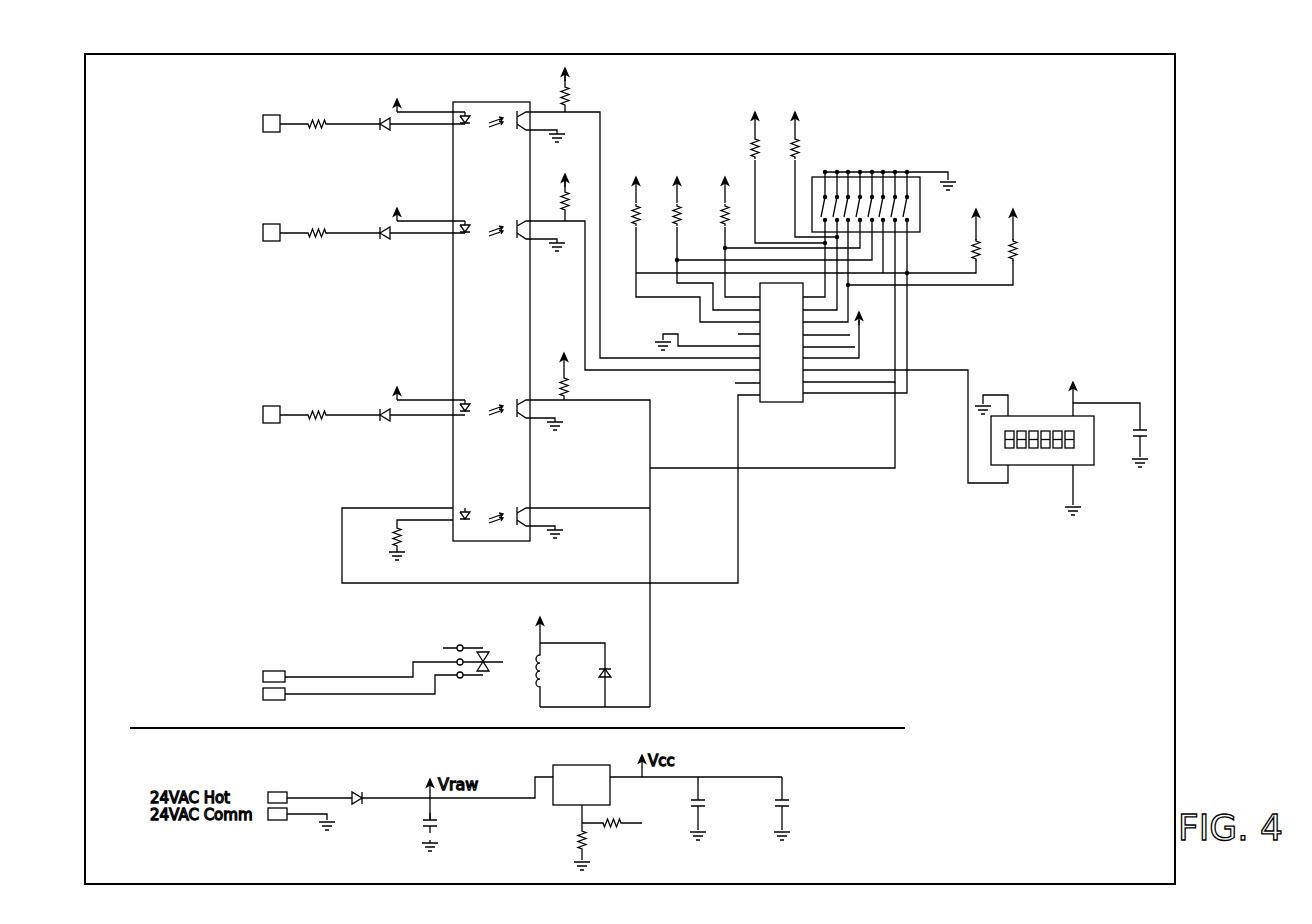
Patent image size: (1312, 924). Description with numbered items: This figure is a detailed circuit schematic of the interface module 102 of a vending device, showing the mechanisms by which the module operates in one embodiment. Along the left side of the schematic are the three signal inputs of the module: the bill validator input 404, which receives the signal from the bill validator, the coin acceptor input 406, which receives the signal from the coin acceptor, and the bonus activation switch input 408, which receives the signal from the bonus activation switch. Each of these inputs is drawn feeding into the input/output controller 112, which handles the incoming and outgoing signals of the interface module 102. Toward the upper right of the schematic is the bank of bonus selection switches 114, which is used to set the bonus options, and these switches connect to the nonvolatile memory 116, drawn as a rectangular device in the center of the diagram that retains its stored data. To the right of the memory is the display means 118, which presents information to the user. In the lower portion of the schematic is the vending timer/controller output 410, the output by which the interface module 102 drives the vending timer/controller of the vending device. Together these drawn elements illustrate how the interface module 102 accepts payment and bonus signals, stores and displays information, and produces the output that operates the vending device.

The interface module 102 is at (1192, 117).
The input/output controller 112 is at (627, 148).
The bonus selection switches 114 is at (940, 140).
The nonvolatile memory 116 is at (788, 498).
The display means 118 is at (1058, 572).
The bill validator input 404 is at (200, 93).
The coin acceptor input 406 is at (202, 199).
The bonus activation switch input 408 is at (205, 358).
The vending timer/controller output 410 is at (756, 690).